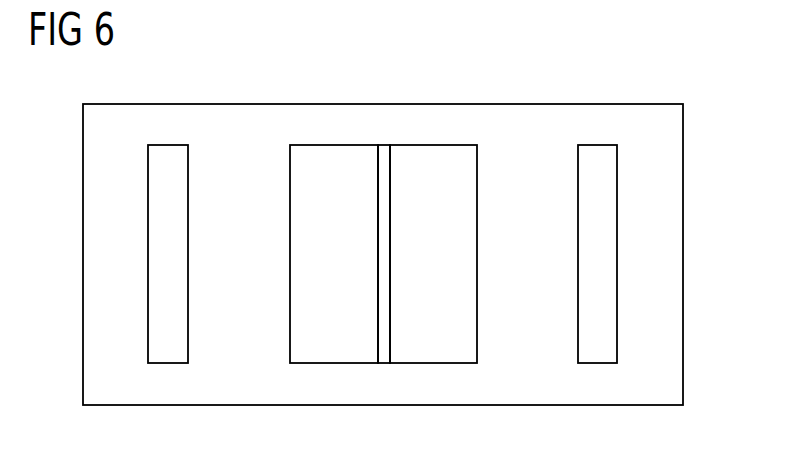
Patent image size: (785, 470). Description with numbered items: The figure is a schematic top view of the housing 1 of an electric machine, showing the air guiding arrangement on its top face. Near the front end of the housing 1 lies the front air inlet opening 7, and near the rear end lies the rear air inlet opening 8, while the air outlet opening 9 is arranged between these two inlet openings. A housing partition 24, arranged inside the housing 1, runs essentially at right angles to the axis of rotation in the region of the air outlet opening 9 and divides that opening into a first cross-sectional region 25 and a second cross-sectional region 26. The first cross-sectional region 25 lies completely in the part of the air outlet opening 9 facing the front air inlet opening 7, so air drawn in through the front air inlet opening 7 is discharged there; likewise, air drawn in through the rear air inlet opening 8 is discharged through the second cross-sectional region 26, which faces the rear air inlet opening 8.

The housing 1 is at (672, 203).
The air outlet opening 9 is at (425, 86).
The front air inlet opening 7 is at (177, 192).
The rear air inlet opening 8 is at (590, 202).
The housing partition 24 is at (387, 292).
The first cross-sectional region 25 is at (298, 280).
The second cross-sectional region 26 is at (465, 277).